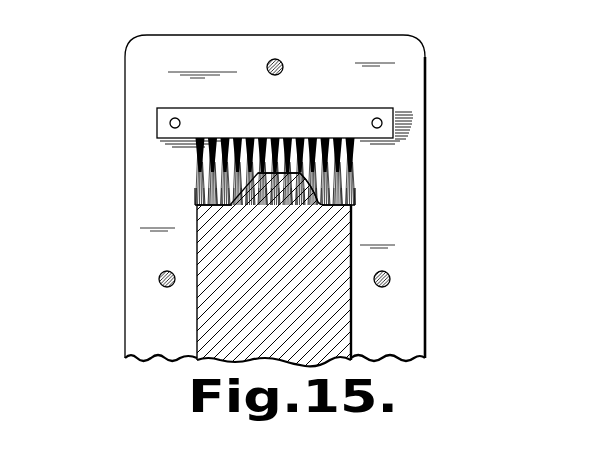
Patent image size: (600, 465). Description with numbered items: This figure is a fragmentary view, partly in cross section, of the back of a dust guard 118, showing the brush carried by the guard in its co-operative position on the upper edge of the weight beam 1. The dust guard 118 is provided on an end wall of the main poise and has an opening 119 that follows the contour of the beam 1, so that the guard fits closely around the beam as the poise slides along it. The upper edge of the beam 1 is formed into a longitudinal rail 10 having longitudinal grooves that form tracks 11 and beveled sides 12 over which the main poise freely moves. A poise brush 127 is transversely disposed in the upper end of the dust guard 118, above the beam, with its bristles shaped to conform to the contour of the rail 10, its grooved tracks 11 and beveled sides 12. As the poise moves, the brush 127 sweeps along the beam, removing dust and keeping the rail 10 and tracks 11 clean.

The weight beam 1 is at (242, 287).
The longitudinal rail 10 is at (280, 173).
The tracks 11 is at (193, 205).
The beveled sides 12 is at (240, 191).
The dust guard 118 is at (420, 160).
The opening 119 is at (195, 233).
The poise brush 127 is at (200, 162).